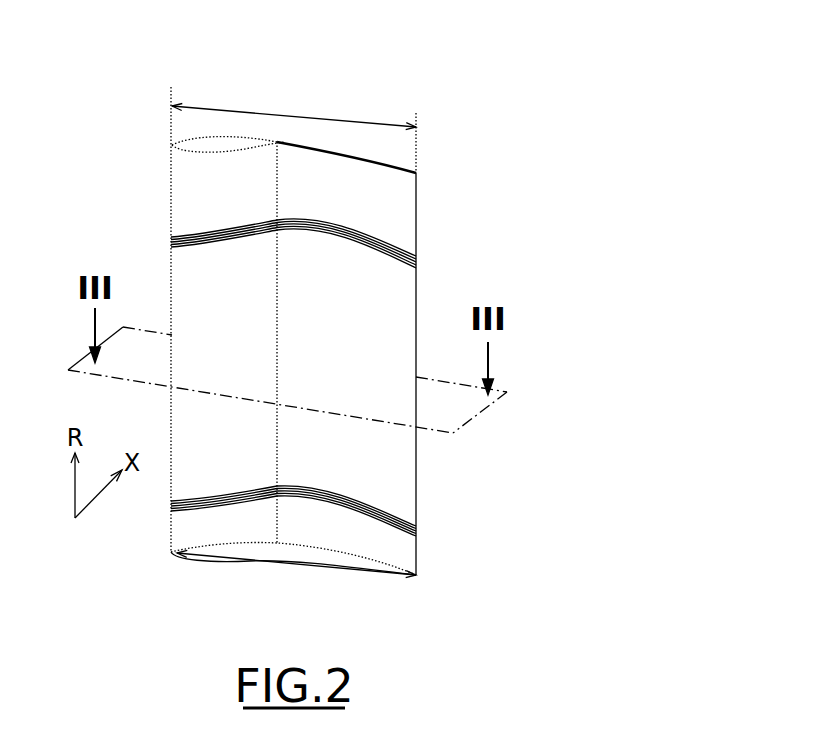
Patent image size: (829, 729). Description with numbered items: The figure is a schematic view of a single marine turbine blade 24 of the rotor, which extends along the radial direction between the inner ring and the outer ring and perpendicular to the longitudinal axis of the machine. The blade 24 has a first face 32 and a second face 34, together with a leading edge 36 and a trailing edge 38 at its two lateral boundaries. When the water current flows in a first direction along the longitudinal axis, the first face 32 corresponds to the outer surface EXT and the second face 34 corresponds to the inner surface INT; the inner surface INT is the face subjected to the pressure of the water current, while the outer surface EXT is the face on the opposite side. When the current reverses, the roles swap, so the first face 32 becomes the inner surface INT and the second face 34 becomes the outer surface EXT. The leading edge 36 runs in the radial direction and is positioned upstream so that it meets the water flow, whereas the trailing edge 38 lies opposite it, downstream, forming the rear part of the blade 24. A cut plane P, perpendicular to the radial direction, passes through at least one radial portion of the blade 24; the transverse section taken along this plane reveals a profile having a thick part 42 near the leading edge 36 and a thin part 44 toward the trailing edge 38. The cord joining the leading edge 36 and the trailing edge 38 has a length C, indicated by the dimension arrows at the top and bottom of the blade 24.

The blade 24 is at (428, 78).
The first face 32 is at (355, 134).
The second face 34 is at (380, 210).
The leading edge 36 is at (171, 172).
The trailing edge 38 is at (416, 193).
The thick part 42 is at (212, 145).
The thin part 44 is at (372, 155).
The length of the cord C is at (288, 112).
The outer surface EXT is at (331, 85).
The inner surface INT is at (341, 257).
The cut plane P is at (455, 423).